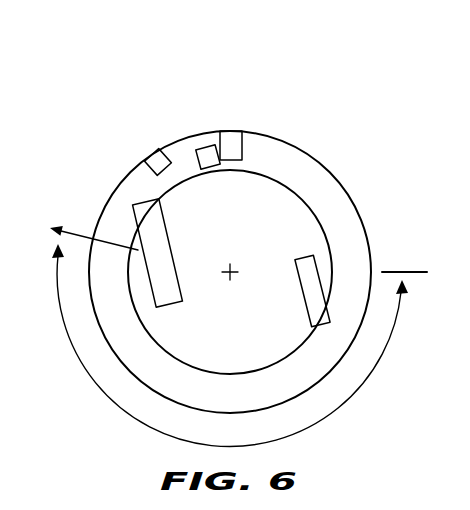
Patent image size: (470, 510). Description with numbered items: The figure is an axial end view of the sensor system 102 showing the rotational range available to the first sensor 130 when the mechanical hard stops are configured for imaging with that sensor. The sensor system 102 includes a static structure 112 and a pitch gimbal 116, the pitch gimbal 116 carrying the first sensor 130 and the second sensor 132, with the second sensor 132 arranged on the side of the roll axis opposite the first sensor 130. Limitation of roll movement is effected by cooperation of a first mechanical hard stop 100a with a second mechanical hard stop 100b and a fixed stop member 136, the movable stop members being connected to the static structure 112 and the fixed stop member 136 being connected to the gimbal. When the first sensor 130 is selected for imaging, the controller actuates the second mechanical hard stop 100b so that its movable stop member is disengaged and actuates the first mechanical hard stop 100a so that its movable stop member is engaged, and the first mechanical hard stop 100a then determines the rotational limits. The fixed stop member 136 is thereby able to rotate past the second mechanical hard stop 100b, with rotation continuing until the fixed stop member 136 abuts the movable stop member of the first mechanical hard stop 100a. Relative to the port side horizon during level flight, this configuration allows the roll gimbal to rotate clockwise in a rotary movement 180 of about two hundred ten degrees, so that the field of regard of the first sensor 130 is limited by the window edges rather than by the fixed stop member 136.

The sensor system 102 is at (123, 430).
The pitch gimbal 116 is at (290, 140).
The static structure 112 is at (222, 373).
The first sensor 130 is at (163, 232).
The second sensor 132 is at (314, 281).
The first mechanical hard stop 100a is at (233, 147).
The second mechanical hard stop 100b is at (144, 163).
The fixed stop member 136 is at (198, 148).
The rotary movement 180 is at (358, 380).